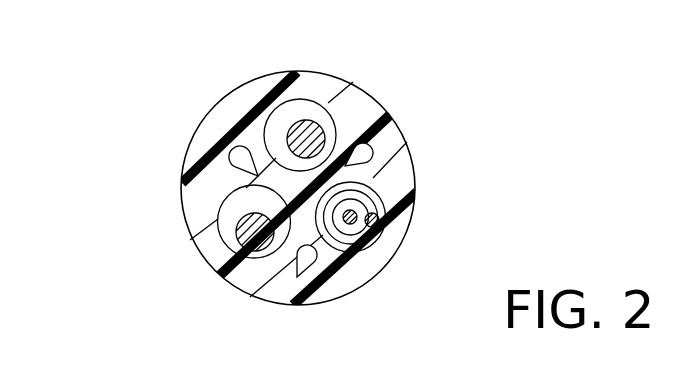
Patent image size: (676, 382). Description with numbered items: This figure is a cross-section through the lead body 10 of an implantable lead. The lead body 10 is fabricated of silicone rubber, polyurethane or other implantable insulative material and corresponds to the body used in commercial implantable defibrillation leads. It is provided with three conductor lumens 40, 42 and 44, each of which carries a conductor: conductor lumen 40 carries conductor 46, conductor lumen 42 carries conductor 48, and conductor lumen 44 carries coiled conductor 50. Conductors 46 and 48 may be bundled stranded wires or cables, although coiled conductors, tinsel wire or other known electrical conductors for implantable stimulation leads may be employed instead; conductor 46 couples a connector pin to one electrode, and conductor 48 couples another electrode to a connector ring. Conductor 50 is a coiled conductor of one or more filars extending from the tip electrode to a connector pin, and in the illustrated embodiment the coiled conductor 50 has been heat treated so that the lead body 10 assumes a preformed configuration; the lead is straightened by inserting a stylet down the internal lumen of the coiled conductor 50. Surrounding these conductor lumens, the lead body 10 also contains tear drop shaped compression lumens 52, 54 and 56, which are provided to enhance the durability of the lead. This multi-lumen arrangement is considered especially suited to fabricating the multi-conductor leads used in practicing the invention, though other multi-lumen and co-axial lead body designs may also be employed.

The lead body 10 is at (360, 108).
The conductor lumen 40 is at (253, 107).
The conductor lumen 42 is at (218, 220).
The conductor lumen 44 is at (358, 222).
The conductor 46 is at (302, 121).
The conductor 48 is at (250, 248).
The coiled conductor 50 is at (372, 201).
The compression lumen 52 is at (365, 153).
The compression lumen 54 is at (229, 158).
The compression lumen 56 is at (380, 225).